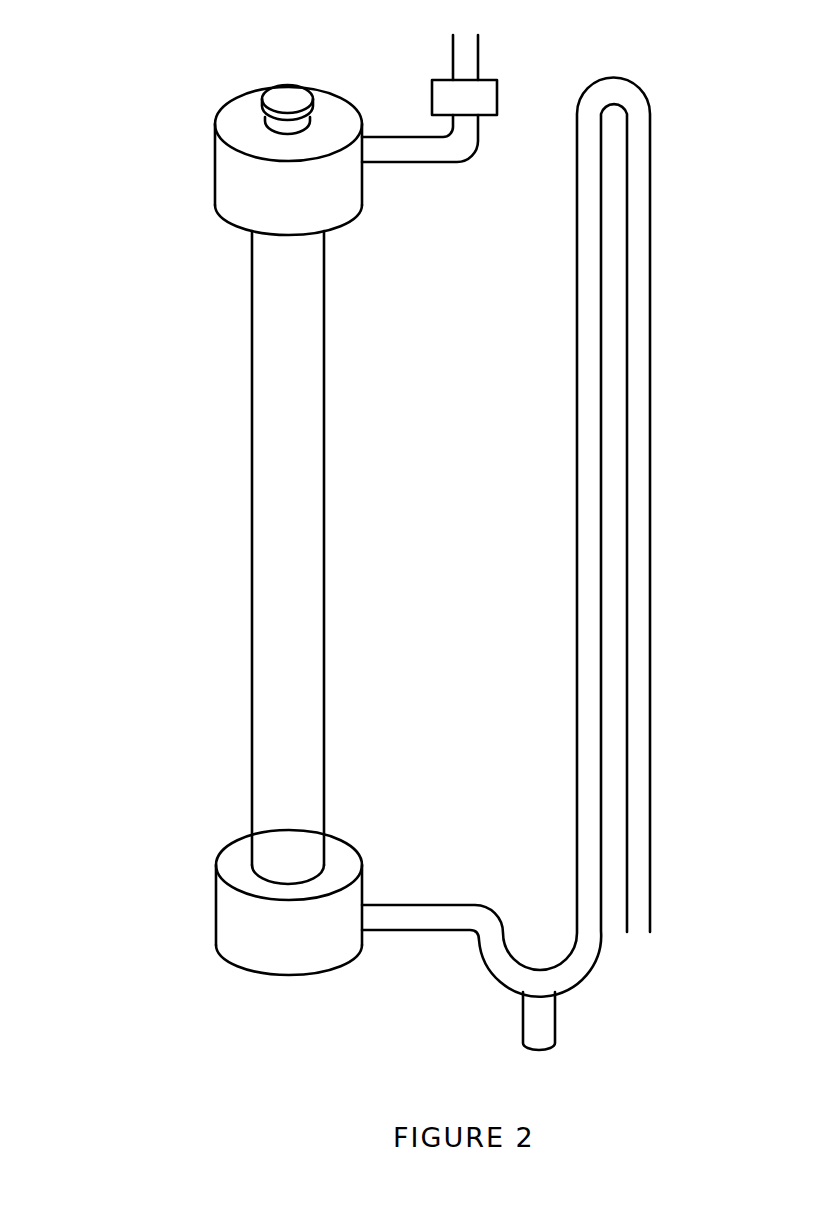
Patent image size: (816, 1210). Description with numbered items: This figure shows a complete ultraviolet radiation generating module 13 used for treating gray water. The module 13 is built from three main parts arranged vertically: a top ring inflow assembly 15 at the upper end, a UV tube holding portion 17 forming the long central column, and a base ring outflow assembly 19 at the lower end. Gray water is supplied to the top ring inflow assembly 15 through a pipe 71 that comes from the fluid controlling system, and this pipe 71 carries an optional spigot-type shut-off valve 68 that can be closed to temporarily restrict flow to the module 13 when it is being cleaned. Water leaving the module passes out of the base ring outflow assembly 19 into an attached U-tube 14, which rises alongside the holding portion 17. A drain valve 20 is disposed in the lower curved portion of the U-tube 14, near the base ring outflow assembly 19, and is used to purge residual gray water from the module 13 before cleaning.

The ultraviolet radiation generating module 13 is at (182, 523).
The U-tube 14 is at (650, 125).
The top ring inflow assembly 15 is at (228, 112).
The UV tube holding portion 17 is at (252, 323).
The base ring outflow assembly 19 is at (216, 907).
The drain valve 20 is at (555, 1027).
The shut-off valve 68 is at (497, 95).
The pipe 71 is at (478, 50).